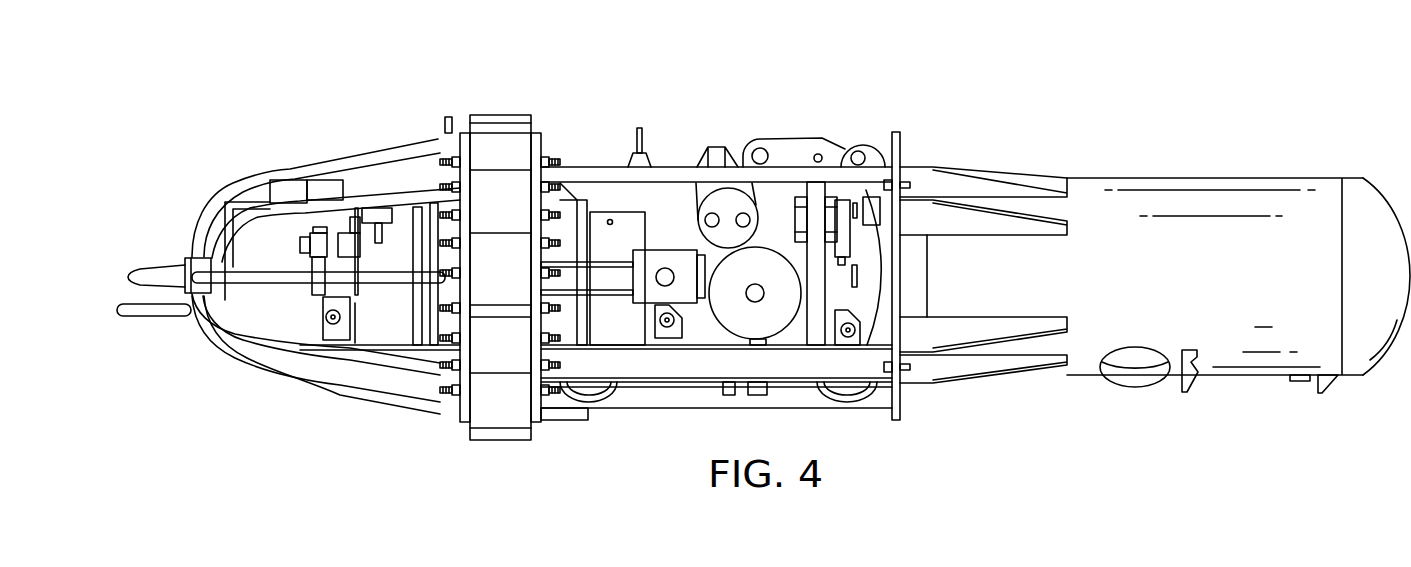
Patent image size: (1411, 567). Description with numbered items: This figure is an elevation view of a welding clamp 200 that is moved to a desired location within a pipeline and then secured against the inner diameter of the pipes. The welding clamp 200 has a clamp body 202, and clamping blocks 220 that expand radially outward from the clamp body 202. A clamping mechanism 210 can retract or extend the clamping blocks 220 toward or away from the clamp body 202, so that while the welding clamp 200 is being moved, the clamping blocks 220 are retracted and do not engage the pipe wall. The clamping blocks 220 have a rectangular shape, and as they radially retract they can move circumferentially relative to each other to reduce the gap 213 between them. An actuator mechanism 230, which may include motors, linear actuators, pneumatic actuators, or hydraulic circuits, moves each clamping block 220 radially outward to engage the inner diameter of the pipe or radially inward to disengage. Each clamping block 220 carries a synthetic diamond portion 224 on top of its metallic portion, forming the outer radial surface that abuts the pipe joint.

The welding clamp 200 is at (1046, 88).
The clamp body 202 is at (1205, 178).
The clamping mechanism 210 is at (548, 145).
The gap 213 is at (483, 408).
The clamping block 220 is at (491, 153).
The synthetic diamond portion 224 is at (510, 148).
The actuator mechanism 230 is at (630, 220).